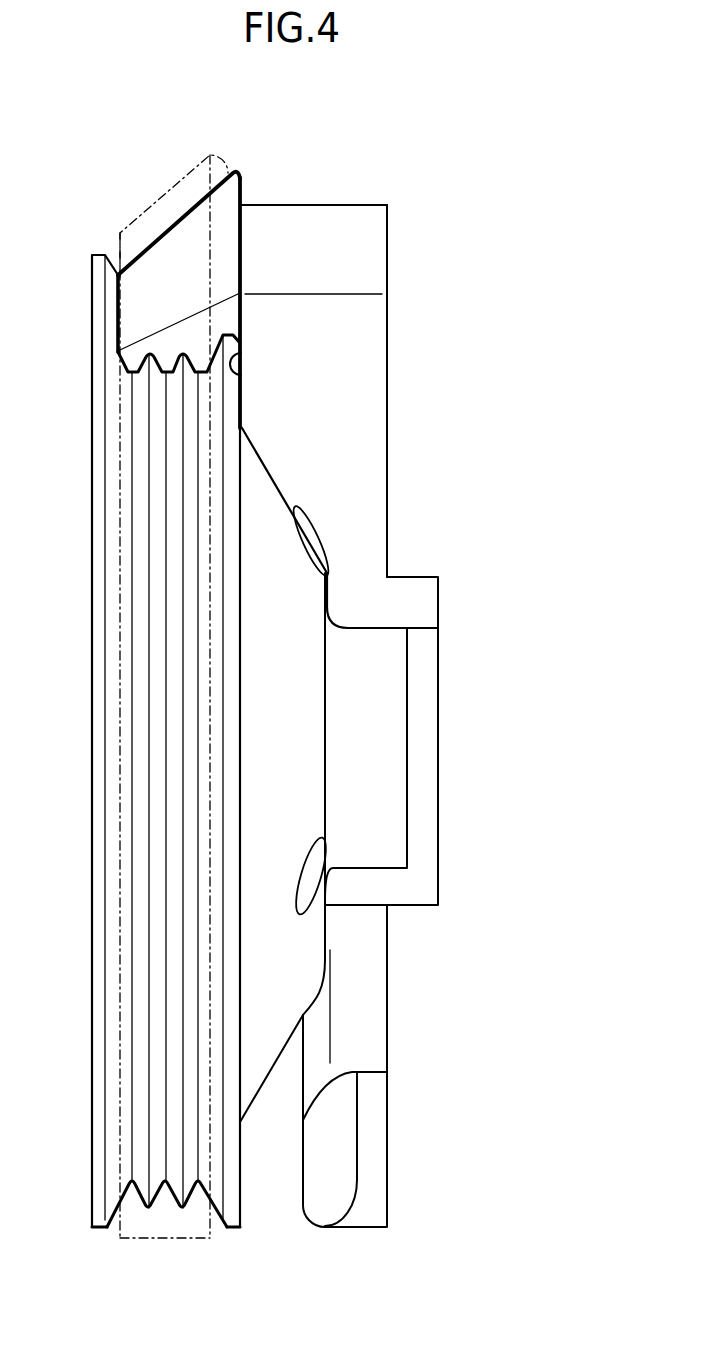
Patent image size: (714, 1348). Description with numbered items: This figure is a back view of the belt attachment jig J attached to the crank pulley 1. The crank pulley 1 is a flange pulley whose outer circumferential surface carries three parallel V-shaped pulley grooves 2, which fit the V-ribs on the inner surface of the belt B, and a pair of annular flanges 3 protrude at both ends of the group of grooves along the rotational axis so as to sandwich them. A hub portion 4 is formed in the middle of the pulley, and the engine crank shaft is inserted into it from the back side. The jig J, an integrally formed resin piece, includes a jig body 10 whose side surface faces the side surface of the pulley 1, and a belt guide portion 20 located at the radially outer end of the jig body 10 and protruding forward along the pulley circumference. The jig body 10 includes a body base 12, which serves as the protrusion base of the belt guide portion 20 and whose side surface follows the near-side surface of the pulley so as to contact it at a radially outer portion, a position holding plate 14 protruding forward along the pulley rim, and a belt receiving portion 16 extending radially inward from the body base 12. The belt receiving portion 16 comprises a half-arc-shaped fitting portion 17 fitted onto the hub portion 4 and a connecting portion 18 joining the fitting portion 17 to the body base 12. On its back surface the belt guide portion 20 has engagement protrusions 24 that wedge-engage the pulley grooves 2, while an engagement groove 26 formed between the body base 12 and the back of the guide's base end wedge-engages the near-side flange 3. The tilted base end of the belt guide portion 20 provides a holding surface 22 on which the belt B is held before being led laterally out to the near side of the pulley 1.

The crank pulley 1 is at (93, 253).
The pulley grooves 2 is at (157, 1238).
The annular flanges 3 is at (97, 1220).
The hub portion 4 is at (387, 792).
The jig body 10 is at (298, 202).
The body base 12 is at (360, 323).
The position holding plate 14 is at (368, 987).
The belt receiving portion 16 is at (505, 470).
The fitting portion 17 is at (423, 680).
The connecting portion 18 is at (360, 465).
The belt guide portion 20 is at (183, 211).
The holding surface 22 is at (164, 284).
The engagement protrusions 24 is at (197, 365).
The engagement groove 26 is at (243, 377).
The V-ribbed belt B is at (137, 220).
The belt attachment jig J is at (366, 186).